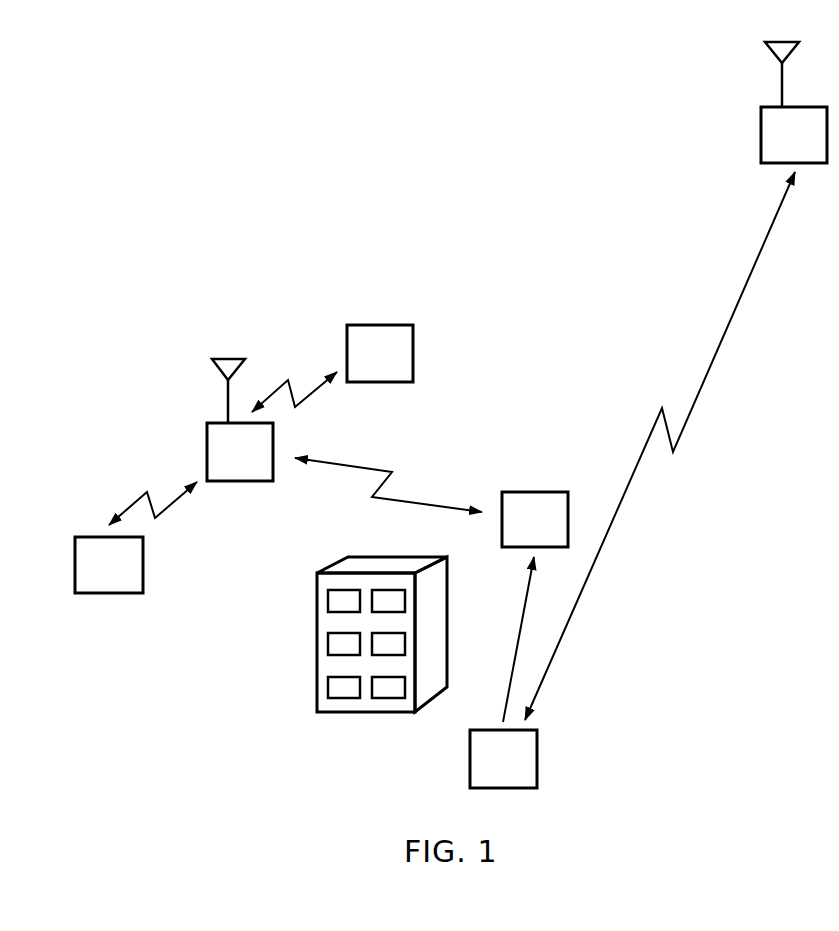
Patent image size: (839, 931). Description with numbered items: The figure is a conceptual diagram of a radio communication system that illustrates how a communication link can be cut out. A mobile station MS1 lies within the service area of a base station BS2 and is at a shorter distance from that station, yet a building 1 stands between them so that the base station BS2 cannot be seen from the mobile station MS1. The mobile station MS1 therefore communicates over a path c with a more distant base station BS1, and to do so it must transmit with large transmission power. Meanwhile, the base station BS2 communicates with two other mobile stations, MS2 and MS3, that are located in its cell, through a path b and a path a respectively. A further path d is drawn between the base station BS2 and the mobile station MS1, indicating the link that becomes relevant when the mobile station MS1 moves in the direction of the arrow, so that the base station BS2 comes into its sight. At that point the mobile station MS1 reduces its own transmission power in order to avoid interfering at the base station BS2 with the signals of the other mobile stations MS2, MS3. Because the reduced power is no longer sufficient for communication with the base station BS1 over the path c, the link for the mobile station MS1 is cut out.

The building 1 is at (317, 622).
The path a is at (153, 491).
The path b is at (294, 378).
The path c is at (660, 446).
The communication link between BS2 and MS1 d is at (388, 483).
The base station BS1 is at (794, 102).
The base station BS2 is at (240, 420).
The mobile station MS1 is at (519, 640).
The mobile station MS2 is at (380, 353).
The mobile station MS3 is at (109, 565).